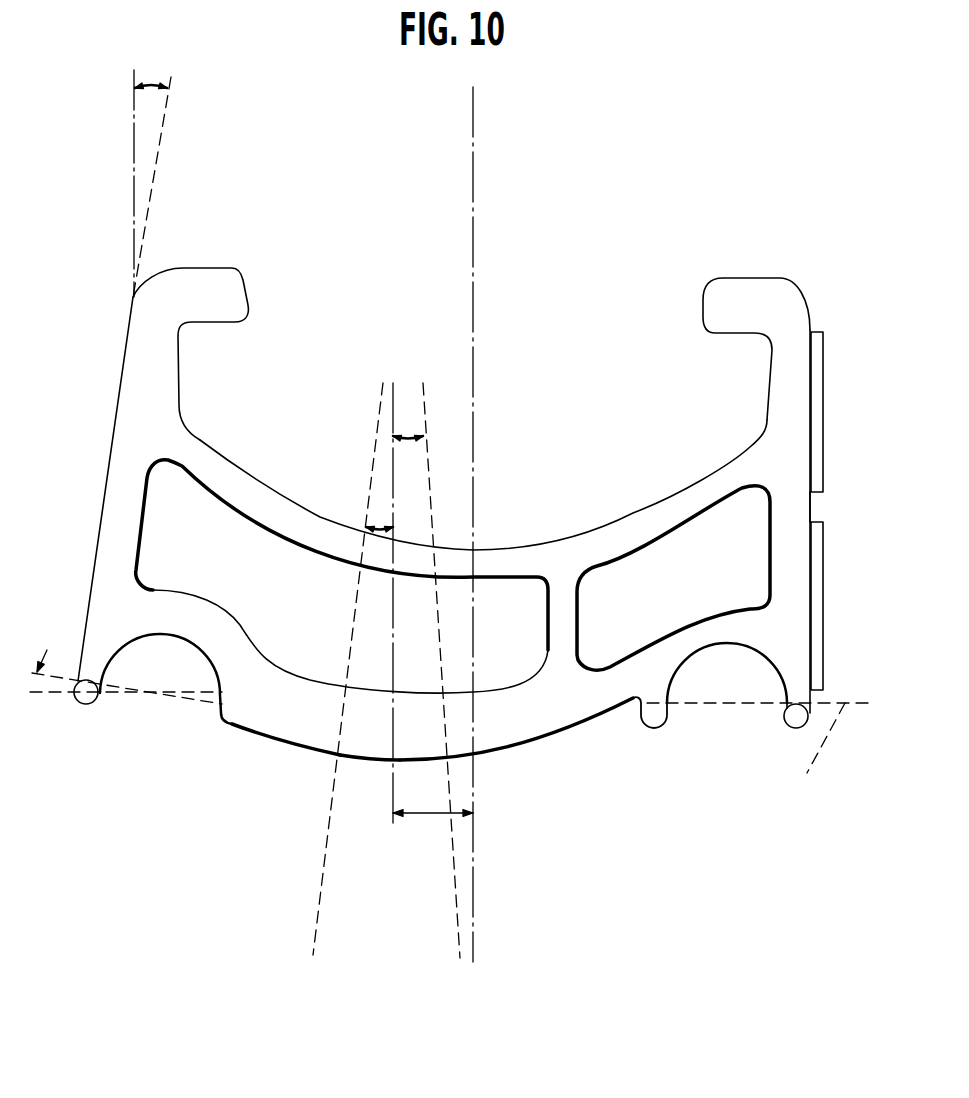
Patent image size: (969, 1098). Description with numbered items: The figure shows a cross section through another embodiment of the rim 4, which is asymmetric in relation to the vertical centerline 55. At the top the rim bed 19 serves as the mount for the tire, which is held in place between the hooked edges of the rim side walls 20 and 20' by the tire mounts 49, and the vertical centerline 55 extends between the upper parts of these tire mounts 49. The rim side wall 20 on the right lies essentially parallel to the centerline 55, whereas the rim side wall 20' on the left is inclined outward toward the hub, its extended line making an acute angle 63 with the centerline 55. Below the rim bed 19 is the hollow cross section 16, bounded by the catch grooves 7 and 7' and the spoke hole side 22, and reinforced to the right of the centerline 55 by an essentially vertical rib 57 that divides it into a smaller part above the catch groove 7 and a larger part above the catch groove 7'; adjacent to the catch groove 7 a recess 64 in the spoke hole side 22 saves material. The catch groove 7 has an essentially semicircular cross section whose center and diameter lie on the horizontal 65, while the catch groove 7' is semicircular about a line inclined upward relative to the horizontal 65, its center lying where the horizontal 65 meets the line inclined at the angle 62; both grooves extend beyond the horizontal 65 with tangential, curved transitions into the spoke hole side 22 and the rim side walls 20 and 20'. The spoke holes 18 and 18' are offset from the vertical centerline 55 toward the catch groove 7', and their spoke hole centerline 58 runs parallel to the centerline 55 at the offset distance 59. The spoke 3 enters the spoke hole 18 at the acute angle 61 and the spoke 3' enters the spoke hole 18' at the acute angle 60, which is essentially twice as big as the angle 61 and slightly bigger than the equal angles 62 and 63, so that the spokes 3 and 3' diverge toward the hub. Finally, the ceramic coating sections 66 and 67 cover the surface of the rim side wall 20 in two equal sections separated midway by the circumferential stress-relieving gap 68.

The spoke 3 is at (477, 670).
The spoke 3' is at (301, 669).
The rim 4 is at (448, 492).
The catch groove 7 is at (727, 723).
The catch groove 7' is at (166, 708).
The hollow cross section 16 is at (513, 598).
The spoke hole 18 is at (516, 749).
The spoke hole 18' is at (277, 775).
The rim bed 19 is at (427, 218).
The rim side wall 20 is at (843, 521).
The rim side wall 20' is at (76, 500).
The spoke hole side 22 is at (368, 758).
The tire mount 49 is at (195, 342).
The vertical centerline 55 is at (477, 141).
The reinforcing rib 57 is at (563, 630).
The spoke hole centerline 58 is at (393, 410).
The offset 59 is at (428, 816).
The acute angle 60 is at (381, 526).
The acute angle 61 is at (410, 434).
The angle 62 is at (152, 84).
The acute angle 63 is at (35, 697).
The groove 64 is at (637, 704).
The horizontal 65 is at (807, 773).
The ceramic coating 66 is at (822, 437).
The ceramic coating 67 is at (817, 618).
The stress-relieving gap 68 is at (820, 507).